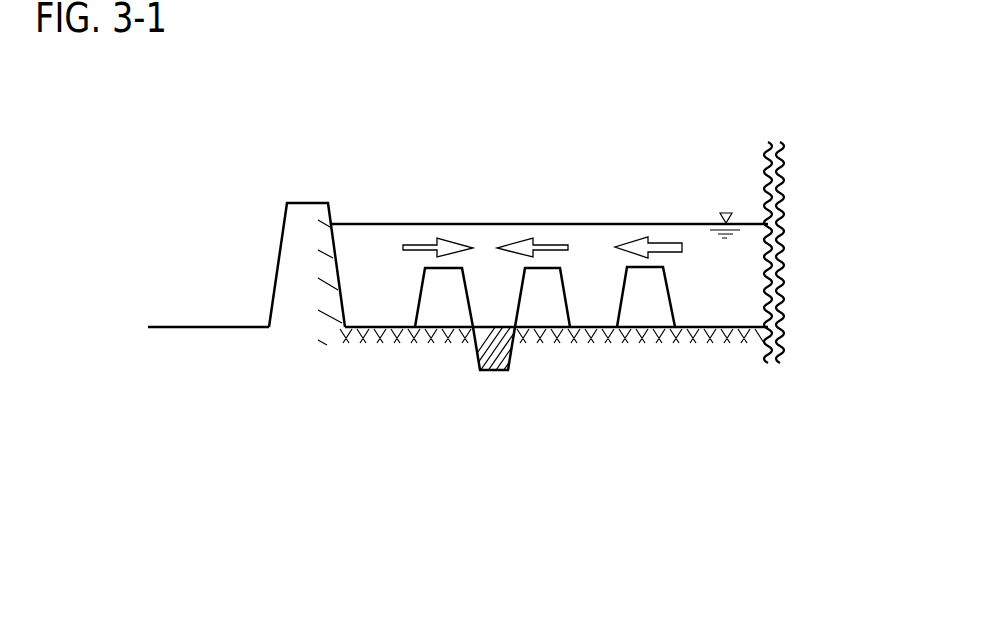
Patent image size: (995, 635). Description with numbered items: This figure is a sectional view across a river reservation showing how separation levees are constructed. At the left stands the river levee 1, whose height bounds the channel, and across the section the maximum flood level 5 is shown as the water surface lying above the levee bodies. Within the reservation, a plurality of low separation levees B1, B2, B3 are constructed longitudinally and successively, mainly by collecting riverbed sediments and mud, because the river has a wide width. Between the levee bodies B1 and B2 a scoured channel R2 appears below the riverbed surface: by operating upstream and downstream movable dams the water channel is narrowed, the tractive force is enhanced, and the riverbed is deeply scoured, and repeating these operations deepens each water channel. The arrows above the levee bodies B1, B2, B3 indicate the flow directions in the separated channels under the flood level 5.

The height of river levee 1 is at (300, 283).
The maximum flood level 5 is at (553, 222).
The levee body (low separation levee) B1 is at (447, 320).
The levee body (low separation levee) B2 is at (546, 313).
The levee body (low separation levee) B3 is at (648, 313).
The recess / pit R2 is at (486, 290).